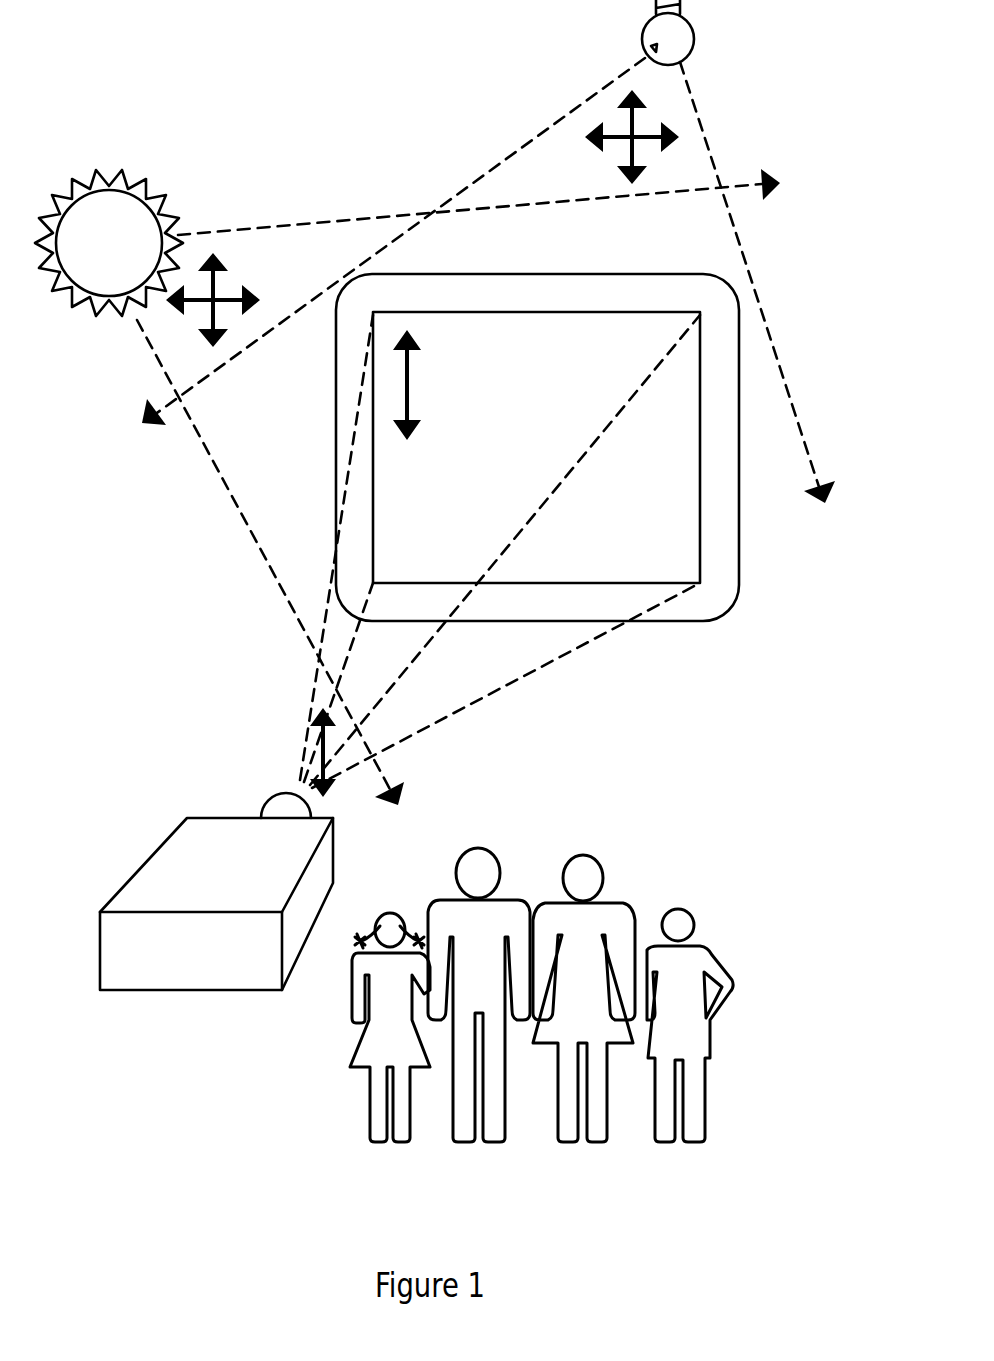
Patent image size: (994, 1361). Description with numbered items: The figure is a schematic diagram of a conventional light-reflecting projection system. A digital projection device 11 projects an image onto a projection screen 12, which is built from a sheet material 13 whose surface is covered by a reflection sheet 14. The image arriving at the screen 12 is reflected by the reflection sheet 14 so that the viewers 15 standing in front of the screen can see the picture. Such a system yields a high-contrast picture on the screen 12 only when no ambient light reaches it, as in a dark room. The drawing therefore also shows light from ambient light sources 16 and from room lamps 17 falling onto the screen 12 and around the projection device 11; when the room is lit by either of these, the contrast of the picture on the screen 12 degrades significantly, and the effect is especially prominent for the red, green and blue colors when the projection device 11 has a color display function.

The digital projection device 11 is at (218, 849).
The projection screen 12 is at (583, 459).
The sheet material 13 is at (723, 518).
The reflection sheet 14 is at (560, 345).
The viewers 15 is at (692, 1033).
The ambient light sources 16 is at (130, 212).
The room lamps 17 is at (678, 45).